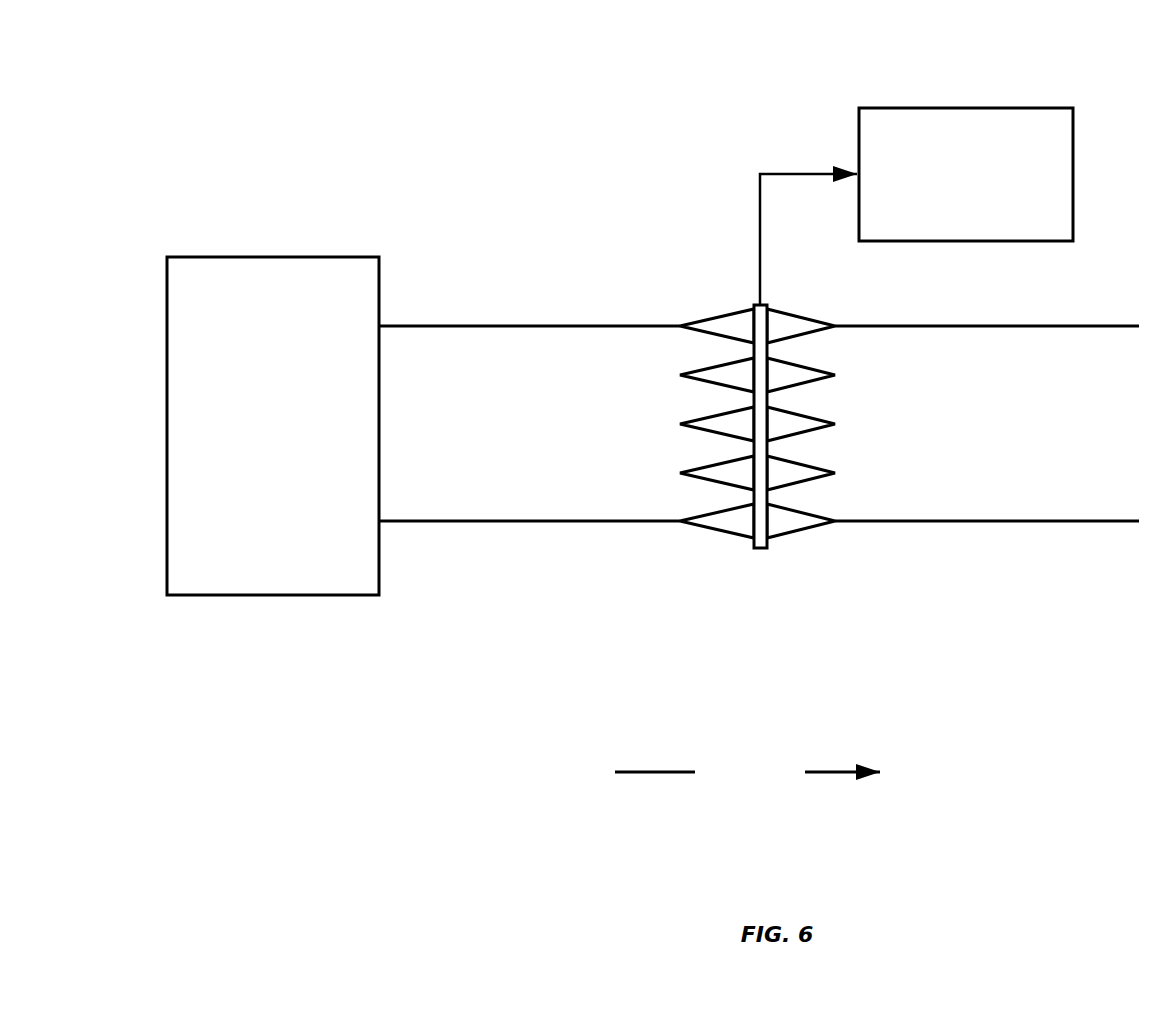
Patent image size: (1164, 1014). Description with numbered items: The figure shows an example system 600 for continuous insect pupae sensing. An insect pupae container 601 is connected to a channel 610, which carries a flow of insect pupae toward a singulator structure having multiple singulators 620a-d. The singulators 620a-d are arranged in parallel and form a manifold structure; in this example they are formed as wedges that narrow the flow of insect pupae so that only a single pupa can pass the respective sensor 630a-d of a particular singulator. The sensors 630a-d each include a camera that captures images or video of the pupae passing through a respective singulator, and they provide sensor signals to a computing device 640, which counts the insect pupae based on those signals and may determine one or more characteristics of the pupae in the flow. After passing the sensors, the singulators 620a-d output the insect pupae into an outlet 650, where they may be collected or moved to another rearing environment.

The system 600 is at (353, 130).
The insect pupae container 601 is at (256, 481).
The channel 610 is at (482, 298).
The singulators 620a-d is at (707, 558).
The sensors 630a-d is at (761, 550).
The computing device 640 is at (950, 201).
The outlet 650 is at (1051, 548).